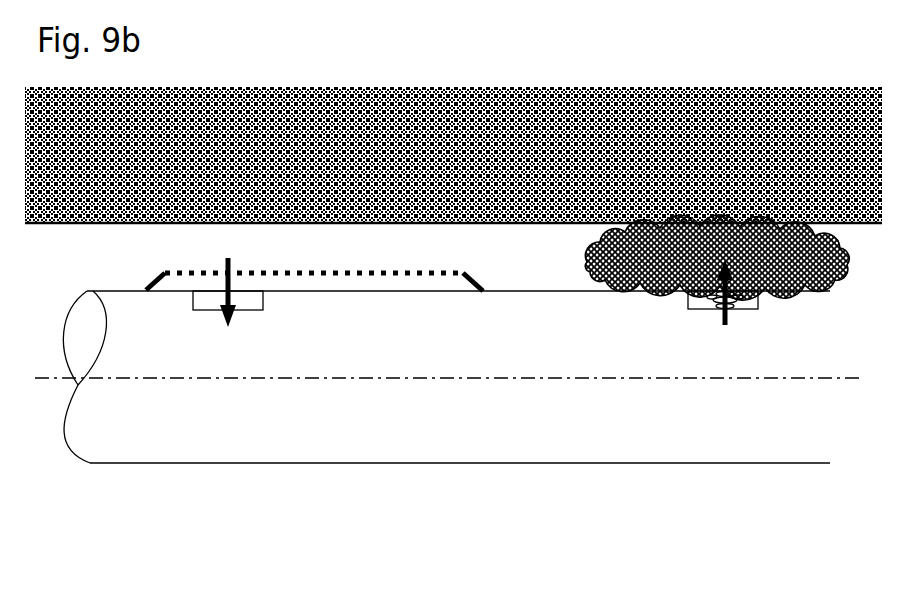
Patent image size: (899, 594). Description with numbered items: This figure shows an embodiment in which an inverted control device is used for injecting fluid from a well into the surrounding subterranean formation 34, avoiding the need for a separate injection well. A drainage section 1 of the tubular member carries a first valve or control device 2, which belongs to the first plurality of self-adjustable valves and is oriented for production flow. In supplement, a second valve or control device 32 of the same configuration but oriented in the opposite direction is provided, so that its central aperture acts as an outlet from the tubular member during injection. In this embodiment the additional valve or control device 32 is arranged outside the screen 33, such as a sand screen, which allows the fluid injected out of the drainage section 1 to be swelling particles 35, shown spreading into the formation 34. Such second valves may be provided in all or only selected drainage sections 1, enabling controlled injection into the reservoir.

The drainage section 1 is at (228, 380).
The first valve or control device 2 is at (197, 310).
The second valve or control device 32 is at (705, 308).
The screen 33 is at (309, 275).
The subterranean formation 34 is at (570, 178).
The swelling particles 35 is at (780, 230).